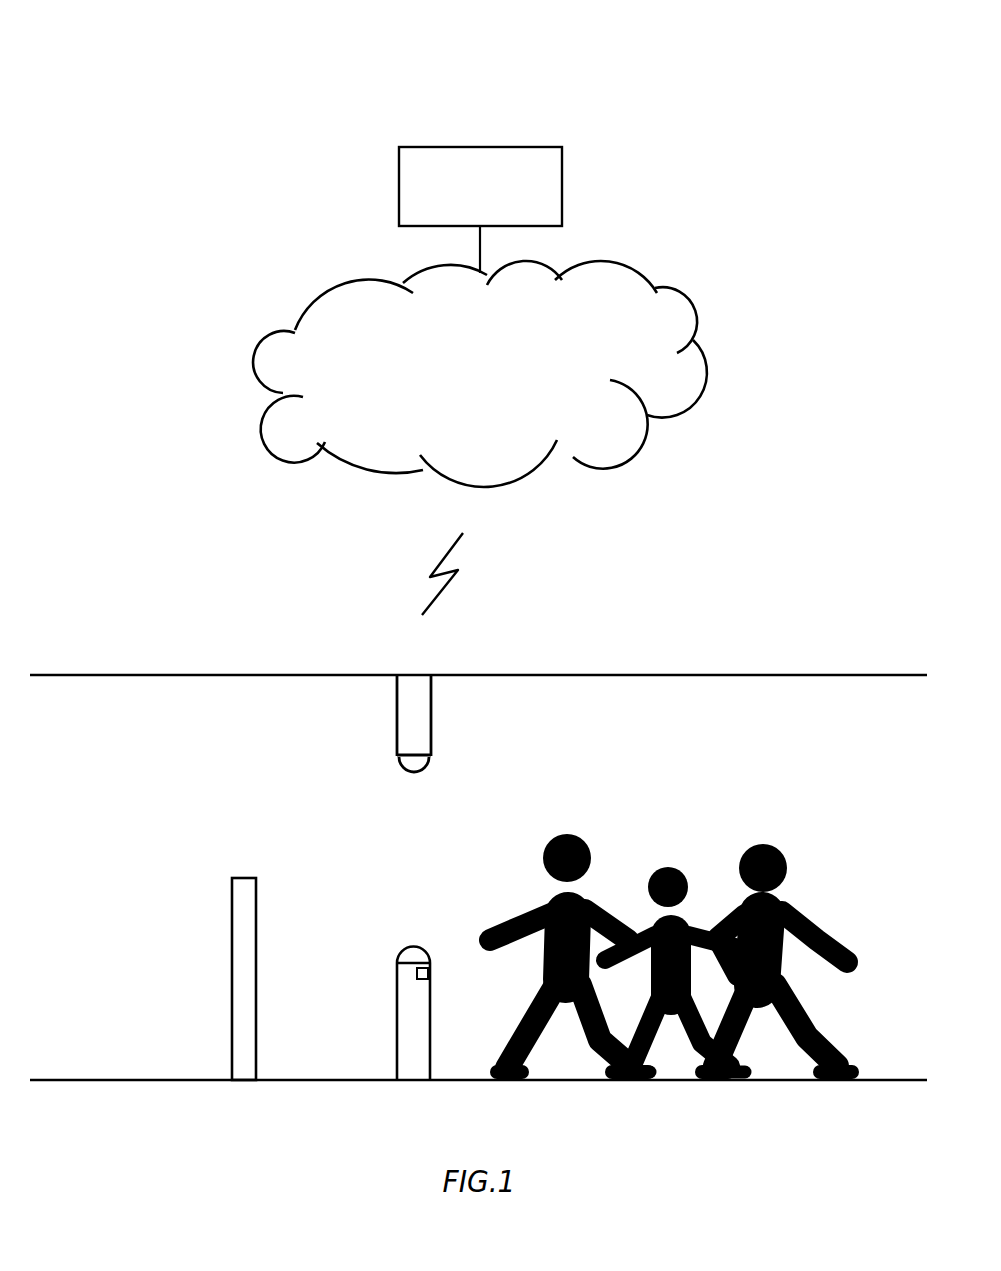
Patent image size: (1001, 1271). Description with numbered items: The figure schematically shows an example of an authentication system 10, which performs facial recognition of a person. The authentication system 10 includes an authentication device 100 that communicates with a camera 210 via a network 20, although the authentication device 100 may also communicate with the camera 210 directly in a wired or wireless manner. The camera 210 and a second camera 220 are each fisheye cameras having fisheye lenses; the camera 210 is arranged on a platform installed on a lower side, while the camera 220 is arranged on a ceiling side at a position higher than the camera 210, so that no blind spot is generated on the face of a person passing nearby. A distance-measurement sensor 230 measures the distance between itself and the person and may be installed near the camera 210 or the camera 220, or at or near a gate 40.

The authentication system 10 is at (128, 54).
The authentication device 100 is at (525, 147).
The network 20 is at (684, 294).
The camera 220 is at (396, 766).
The gate 40 is at (244, 874).
The camera 210 is at (382, 1007).
The distance-measurement sensor 230 is at (416, 973).